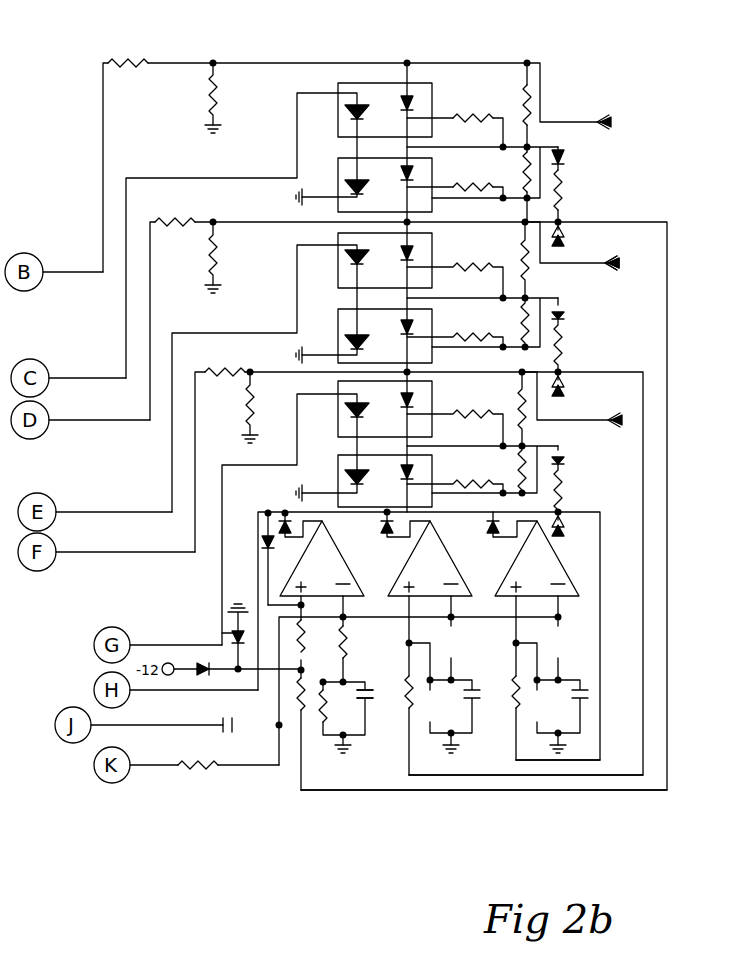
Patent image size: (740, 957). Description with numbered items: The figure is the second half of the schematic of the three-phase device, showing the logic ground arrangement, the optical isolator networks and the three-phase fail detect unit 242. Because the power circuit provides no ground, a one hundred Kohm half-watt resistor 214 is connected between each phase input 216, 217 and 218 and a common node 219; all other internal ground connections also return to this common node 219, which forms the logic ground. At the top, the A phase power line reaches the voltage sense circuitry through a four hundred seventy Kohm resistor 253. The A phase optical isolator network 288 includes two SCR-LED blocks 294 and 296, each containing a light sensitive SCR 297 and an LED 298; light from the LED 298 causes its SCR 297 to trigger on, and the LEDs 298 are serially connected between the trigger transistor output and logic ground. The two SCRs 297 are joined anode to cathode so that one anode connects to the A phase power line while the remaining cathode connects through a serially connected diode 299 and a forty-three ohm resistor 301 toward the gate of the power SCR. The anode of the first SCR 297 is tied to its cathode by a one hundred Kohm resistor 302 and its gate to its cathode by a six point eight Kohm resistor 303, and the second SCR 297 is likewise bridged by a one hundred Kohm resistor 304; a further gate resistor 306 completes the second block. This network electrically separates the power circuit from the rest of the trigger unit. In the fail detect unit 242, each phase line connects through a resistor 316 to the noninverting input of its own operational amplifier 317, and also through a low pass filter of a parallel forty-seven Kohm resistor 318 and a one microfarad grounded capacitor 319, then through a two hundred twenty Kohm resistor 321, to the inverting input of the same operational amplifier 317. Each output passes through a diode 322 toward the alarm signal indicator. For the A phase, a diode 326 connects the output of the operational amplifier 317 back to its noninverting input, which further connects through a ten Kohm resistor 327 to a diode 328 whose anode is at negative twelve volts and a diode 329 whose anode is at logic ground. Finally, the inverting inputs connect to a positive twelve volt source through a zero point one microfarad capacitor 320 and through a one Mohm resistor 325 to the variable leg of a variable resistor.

The resistor 253 is at (132, 60).
The resistor 214 is at (202, 98).
The common node 219 is at (206, 129).
The SCR-LED block 294 is at (340, 84).
The optical isolator network 288 is at (342, 152).
The LED 298 is at (350, 115).
The light sensitive SCR 297 is at (418, 102).
The SCR-LED block 296 is at (304, 206).
The resistor 303 is at (472, 127).
The resistor 306 is at (472, 200).
The resistor 302 is at (532, 98).
The resistor 304 is at (521, 175).
The phase input 216 is at (608, 120).
The phase input 217 is at (612, 261).
The phase input 218 is at (606, 416).
The diode 299 is at (566, 160).
The resistor 301 is at (566, 194).
The diode 322 is at (282, 514).
The diode 326 is at (262, 546).
The operational amplifier 317 is at (344, 574).
The diode 329 is at (222, 634).
The diode 328 is at (204, 666).
The capacitor 320 is at (222, 720).
The resistor 316 is at (298, 692).
The resistor 327 is at (306, 644).
The resistor 321 is at (348, 648).
The capacitor 319 is at (366, 688).
The resistor 318 is at (326, 704).
The resistor 325 is at (200, 770).
The three-phase fail detect unit 242 is at (433, 790).